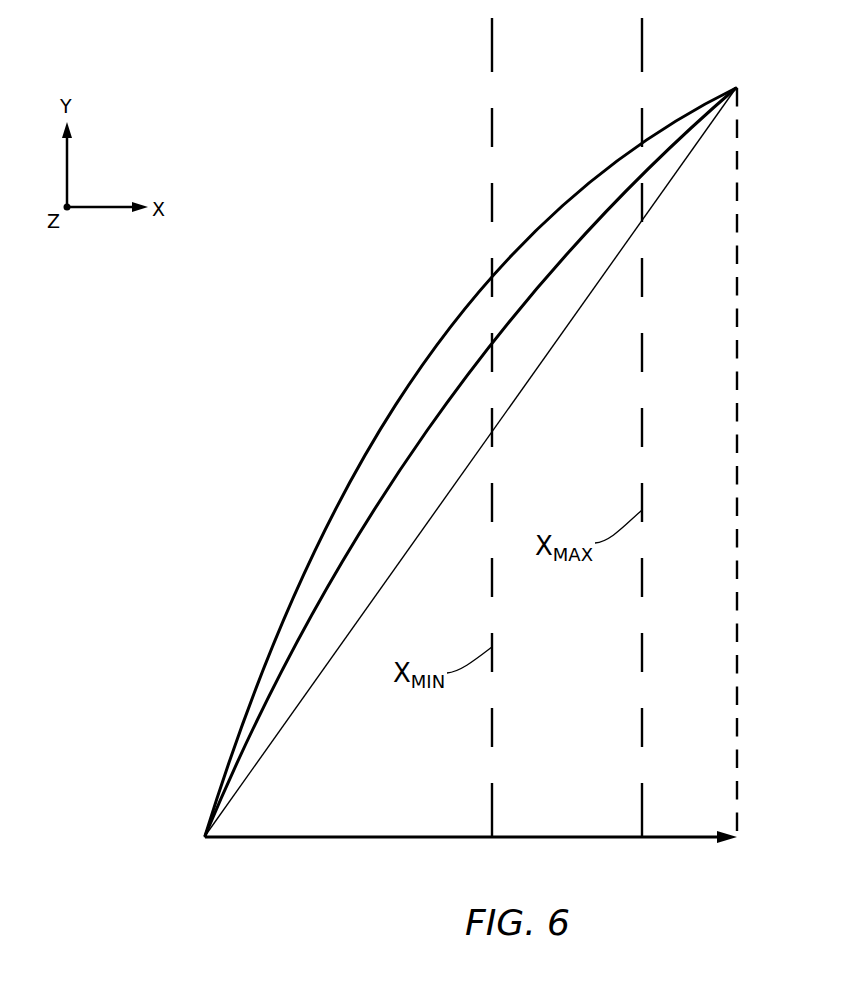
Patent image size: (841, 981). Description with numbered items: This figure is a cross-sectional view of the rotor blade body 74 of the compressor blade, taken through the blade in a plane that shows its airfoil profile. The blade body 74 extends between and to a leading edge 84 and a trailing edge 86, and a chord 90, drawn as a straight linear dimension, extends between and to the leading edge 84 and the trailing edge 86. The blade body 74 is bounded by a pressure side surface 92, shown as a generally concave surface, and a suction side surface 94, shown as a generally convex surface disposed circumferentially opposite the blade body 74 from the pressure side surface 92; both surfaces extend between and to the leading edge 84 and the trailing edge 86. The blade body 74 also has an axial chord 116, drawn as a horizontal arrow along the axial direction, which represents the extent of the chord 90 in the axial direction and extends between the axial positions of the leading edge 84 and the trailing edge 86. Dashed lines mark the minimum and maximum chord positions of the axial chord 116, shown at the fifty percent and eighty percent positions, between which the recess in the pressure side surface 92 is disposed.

The blade body 74 is at (490, 432).
The leading edge 84 is at (205, 836).
The trailing edge 86 is at (737, 88).
The chord 90 is at (670, 180).
The pressure side surface 92 is at (455, 445).
The suction side surface 94 is at (452, 292).
The axial chord 116 is at (411, 836).